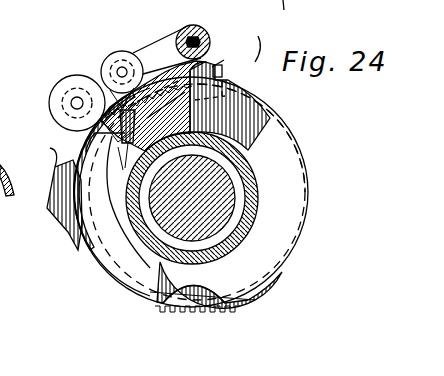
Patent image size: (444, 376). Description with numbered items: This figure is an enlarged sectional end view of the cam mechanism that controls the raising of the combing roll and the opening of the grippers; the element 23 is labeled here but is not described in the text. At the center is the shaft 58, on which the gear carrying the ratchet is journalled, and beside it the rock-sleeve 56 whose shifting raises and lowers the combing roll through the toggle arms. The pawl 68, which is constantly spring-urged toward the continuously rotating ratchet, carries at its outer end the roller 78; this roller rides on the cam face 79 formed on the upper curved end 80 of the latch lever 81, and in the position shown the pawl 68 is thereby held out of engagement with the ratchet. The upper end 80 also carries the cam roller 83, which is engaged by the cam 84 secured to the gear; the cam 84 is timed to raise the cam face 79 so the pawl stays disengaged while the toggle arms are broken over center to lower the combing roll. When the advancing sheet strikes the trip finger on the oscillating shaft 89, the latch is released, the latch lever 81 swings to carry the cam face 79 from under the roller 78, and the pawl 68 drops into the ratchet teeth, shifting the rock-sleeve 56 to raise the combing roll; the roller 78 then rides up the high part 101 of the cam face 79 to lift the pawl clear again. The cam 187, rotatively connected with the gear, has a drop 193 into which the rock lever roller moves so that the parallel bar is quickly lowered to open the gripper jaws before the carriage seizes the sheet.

The shaft 23 is at (290, 17).
The rock-sleeve 56 is at (247, 171).
The shaft 58 is at (213, 195).
The pawl 68 is at (157, 45).
The roller 78 is at (114, 52).
The cam face 79 is at (226, 57).
The upper curved end 80 is at (206, 73).
The latch lever 81 is at (41, 199).
The cam roller 83 is at (80, 76).
The cam 84 is at (266, 127).
The oscillating shaft 89 is at (120, 180).
The high part 101 is at (270, 48).
The cam 187 is at (272, 272).
The drop 193 is at (192, 298).